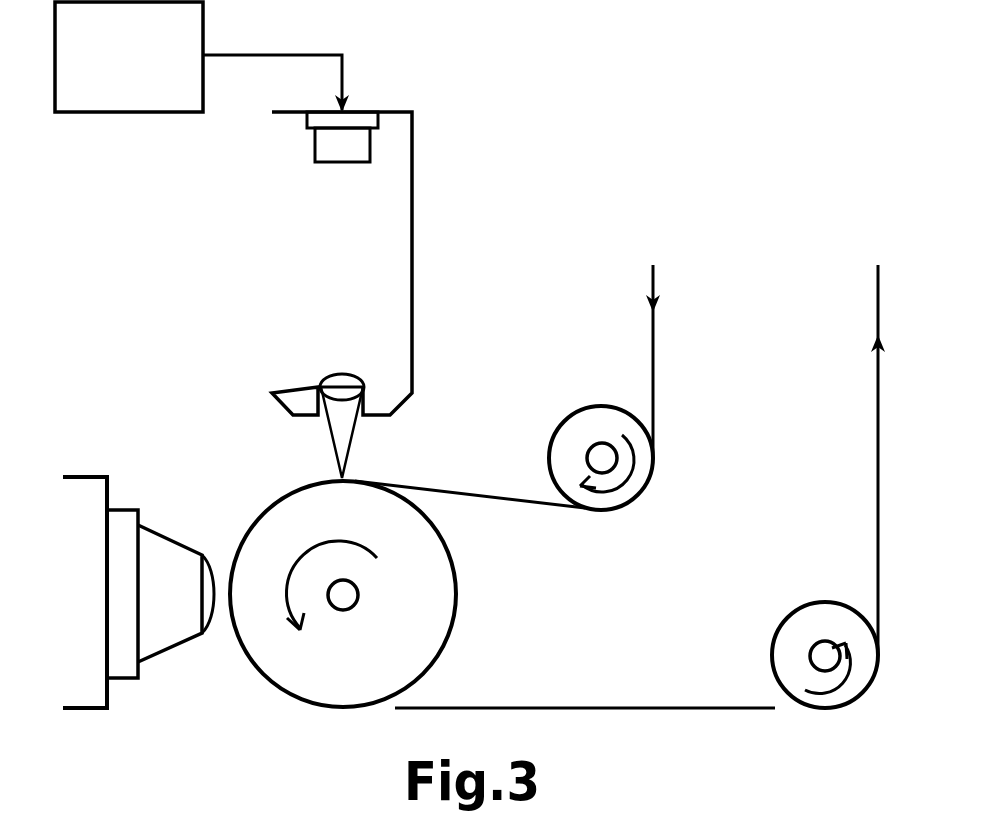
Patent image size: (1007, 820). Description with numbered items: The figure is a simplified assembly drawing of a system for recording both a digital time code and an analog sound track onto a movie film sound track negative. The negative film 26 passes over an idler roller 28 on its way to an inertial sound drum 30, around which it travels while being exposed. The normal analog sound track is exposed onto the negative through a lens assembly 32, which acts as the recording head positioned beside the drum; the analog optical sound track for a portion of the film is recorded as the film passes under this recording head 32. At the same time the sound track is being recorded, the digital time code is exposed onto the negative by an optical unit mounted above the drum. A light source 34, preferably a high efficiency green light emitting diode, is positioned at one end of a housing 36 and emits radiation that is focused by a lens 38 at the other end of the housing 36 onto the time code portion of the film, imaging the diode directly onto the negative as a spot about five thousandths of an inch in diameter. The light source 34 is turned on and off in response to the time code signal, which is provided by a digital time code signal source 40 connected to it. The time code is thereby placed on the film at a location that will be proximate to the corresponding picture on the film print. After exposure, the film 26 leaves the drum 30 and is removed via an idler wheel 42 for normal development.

The negative film 26 is at (479, 496).
The idler roller 28 is at (580, 410).
The inertial sound drum 30 is at (455, 585).
The lens assembly 32 is at (175, 648).
The light source 34 is at (370, 112).
The housing 36 is at (412, 222).
The lens 38 is at (333, 377).
The digital time code signal source 40 is at (140, 112).
The idler wheel 42 is at (805, 614).